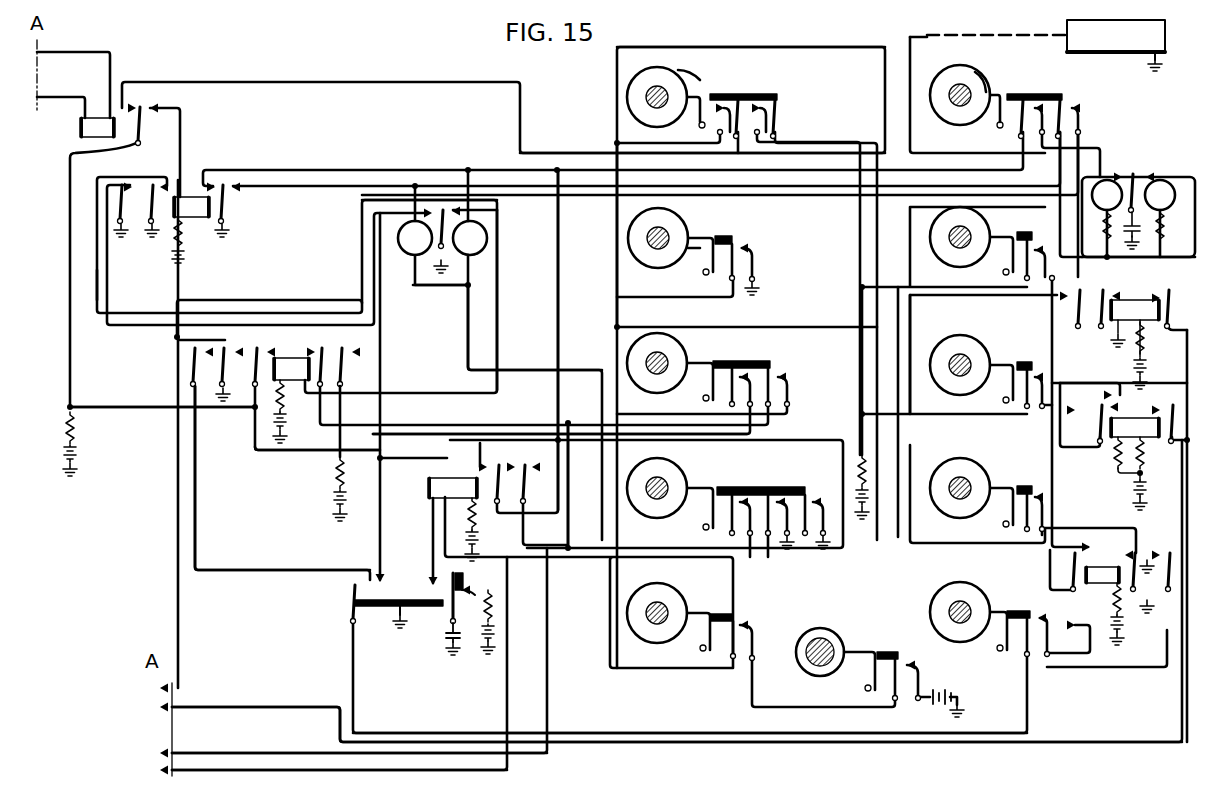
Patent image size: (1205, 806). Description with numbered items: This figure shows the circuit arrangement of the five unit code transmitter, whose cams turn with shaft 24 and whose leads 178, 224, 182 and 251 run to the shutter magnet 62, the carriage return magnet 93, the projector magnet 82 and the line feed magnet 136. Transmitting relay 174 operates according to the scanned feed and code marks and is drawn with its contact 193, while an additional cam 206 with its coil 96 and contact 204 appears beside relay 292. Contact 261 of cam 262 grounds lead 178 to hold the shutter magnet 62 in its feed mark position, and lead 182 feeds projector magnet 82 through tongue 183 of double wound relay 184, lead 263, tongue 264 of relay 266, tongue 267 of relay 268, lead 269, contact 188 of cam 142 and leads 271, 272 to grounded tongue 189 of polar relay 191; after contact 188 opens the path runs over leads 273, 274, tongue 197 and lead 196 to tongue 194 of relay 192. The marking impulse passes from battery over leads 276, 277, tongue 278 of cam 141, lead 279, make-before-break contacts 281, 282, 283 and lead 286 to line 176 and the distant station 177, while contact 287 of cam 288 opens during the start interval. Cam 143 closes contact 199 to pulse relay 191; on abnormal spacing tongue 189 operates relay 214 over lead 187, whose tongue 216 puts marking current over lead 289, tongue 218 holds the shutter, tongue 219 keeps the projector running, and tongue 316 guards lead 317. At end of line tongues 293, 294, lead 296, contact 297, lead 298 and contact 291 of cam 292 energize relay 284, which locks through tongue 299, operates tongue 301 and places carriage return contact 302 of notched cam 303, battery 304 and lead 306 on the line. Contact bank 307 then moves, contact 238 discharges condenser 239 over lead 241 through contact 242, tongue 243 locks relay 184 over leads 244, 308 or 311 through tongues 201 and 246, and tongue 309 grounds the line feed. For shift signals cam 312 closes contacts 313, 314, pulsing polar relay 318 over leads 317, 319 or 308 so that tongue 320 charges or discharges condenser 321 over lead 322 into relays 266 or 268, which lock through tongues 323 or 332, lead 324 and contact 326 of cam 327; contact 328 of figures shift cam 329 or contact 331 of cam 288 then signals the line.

The transmitting relay 174 is at (88, 126).
The switch blade 193 is at (143, 126).
The relay 192 is at (183, 195).
The contact tongue of relay 192 194 is at (152, 183).
The contact tongue of relay 192 293 is at (120, 206).
The contact tongue of relay 192 201 is at (230, 208).
The lead 196 is at (101, 292).
The contact tongue of relay 214 294 is at (192, 352).
The contact tongue of relay 214 218 is at (222, 346).
The tongue of relay 214 216 is at (256, 346).
The relay 214 is at (290, 358).
The tongue of relay 214 219 is at (322, 346).
The contact tongue of relay 214 316 is at (345, 362).
The lead 276 is at (160, 412).
The lead 277 is at (303, 452).
The lead 271 is at (432, 434).
The double wound relay 184 is at (437, 480).
The contact tongue of relay 184 243 is at (500, 464).
The contact tongue of relay 184 183 is at (542, 484).
The lead 273 is at (590, 506).
The lead 244 is at (564, 280).
The lead 274 is at (585, 408).
The lead 311 is at (665, 432).
The lead 289 is at (502, 305).
The lead 187 is at (498, 368).
The lead 308 is at (438, 158).
The lead 317 is at (598, 190).
The polar relay 191 is at (400, 232).
The lead 272 is at (376, 264).
The contact tongue of polar relay 191 189 is at (455, 218).
The cam 288 is at (648, 70).
The shaft 24 is at (670, 90).
The contact of cam 288 287 is at (738, 94).
The transmitting contact 331 is at (783, 116).
The lead 279 is at (788, 45).
The cam 312 is at (960, 68).
The contact 313 is at (1025, 95).
The contact 314 is at (1068, 105).
The line 176 is at (952, 35).
The distant station 177 is at (1140, 30).
The lead 286 is at (913, 153).
The polar relay 318 is at (1150, 175).
The contact tongue of polar relay 318 320 is at (1131, 173).
The condenser 321 is at (1150, 238).
The lead 319 is at (800, 160).
The cam 262 is at (690, 236).
The contact of cam 262 261 is at (742, 248).
The figures shift cam 329 is at (930, 245).
The transmitting contact 328 is at (1032, 243).
The notched cam 303 is at (970, 345).
The carriage return transmitting contact 302 is at (1036, 390).
The lead 263 is at (945, 296).
The make-before-break contacts of relay 266 281 is at (1075, 298).
The double wound relay 266 is at (1100, 304).
The contact tongue of relay 266 264 is at (1100, 314).
The contact tongue of relay 266 323 is at (1170, 326).
The lead 322 is at (1143, 362).
The make-before-break contacts of relay 268 282 is at (1120, 396).
The contact tongue of relay 268 267 is at (1080, 452).
The contact tongue of relay 268 332 is at (1168, 440).
The lead 306 is at (1056, 470).
The double wound relay 268 is at (1130, 470).
The battery 304 is at (858, 455).
The cam 141 is at (672, 340).
The tongue of cam 141 278 is at (735, 360).
The contact tongue 197 is at (775, 370).
The cam 142 is at (672, 478).
The contact of cam 142 188 is at (744, 492).
The contact tongue of cam 142 246 is at (780, 492).
The contact of cam 142 242 is at (812, 505).
The cam 143 is at (675, 608).
The contact of cam 143 199 is at (737, 625).
The lead 241 is at (665, 562).
The relay 206 is at (798, 642).
The relay coil 96 is at (803, 668).
The relay contact 204 is at (905, 650).
The cam 292 is at (955, 630).
The make-before-break contact of cam 292 291 is at (1050, 618).
The relay 284 is at (1090, 572).
The locking contact tongue of relay 284 299 is at (1167, 572).
The lead 269 is at (875, 580).
The cam 327 is at (960, 500).
The contact 326 is at (1035, 497).
The make-before-break contact of relay 284 283 is at (1085, 545).
The contact tongue of relay 284 301 is at (1136, 533).
The lead 324 is at (1185, 498).
The contact tongue of bank 307 309 is at (398, 585).
The contact of bank 307 297 is at (350, 592).
The contact bank 307 is at (350, 605).
The contact of bank 307 238 is at (462, 590).
The condenser 239 is at (446, 640).
The lead 296 is at (240, 568).
The lead 178 is at (182, 586).
The lead 224 is at (230, 705).
The lead 182 is at (222, 745).
The lead 251 is at (265, 770).
The lead 298 is at (683, 733).
The shutter magnet 62 is at (135, 688).
The carriage return magnet 93 is at (135, 707).
The projector magnet 82 is at (135, 753).
The line feed magnet 136 is at (133, 769).